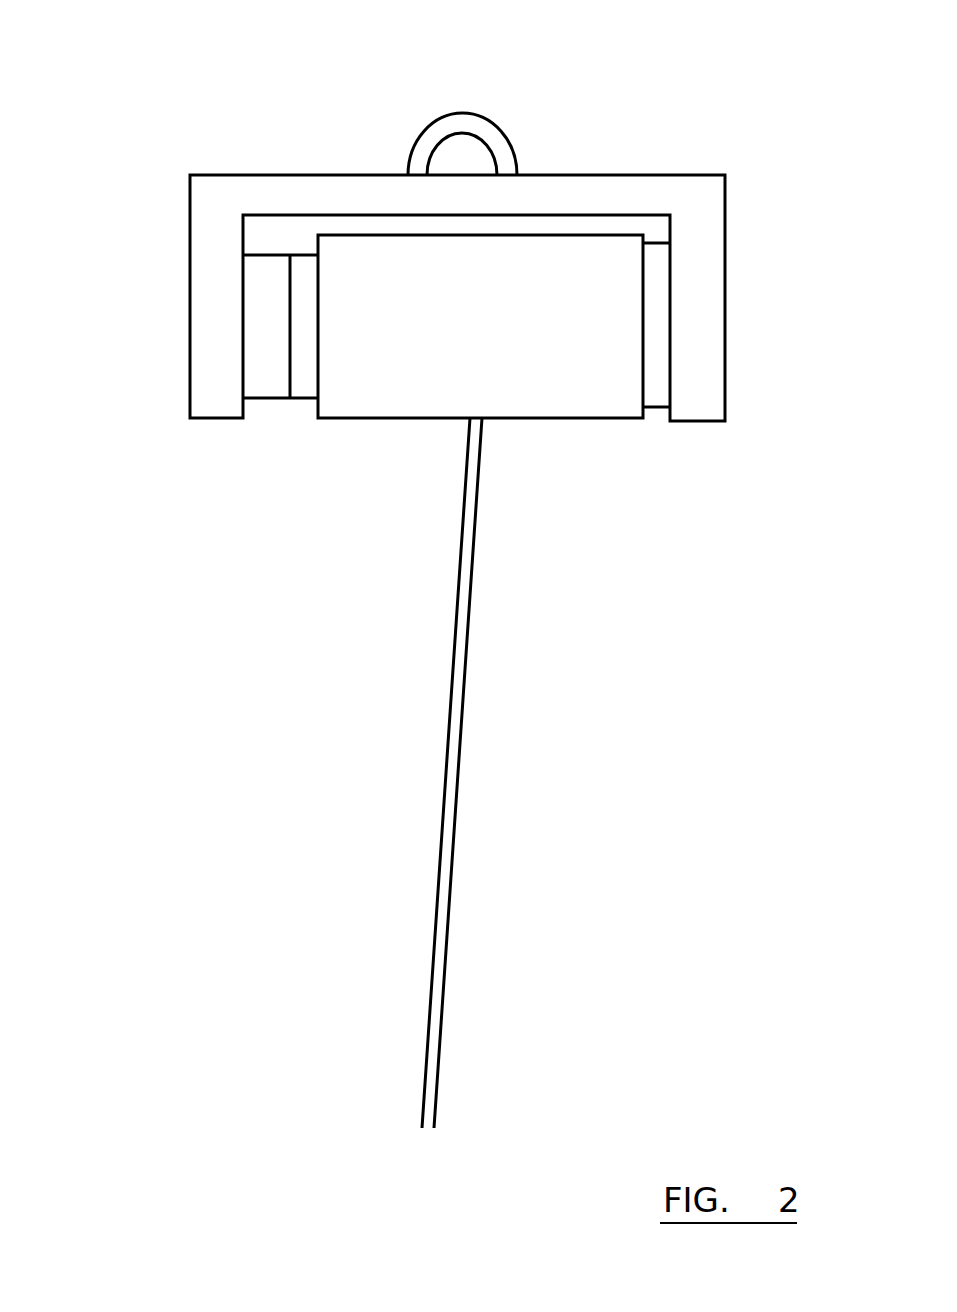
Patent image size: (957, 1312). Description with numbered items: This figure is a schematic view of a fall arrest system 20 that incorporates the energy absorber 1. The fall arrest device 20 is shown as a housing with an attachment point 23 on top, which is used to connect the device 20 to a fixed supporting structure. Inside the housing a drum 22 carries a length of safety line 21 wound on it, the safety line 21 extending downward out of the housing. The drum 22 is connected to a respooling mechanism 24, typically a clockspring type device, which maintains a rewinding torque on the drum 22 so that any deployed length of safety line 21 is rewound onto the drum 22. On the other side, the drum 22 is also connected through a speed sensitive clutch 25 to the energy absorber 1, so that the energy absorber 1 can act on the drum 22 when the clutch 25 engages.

The energy absorber 1 is at (267, 317).
The fall arrest system 20 is at (664, 137).
The safety line 21 is at (448, 857).
The drum 22 is at (552, 388).
The attachment point 23 is at (472, 125).
The respooling mechanism 24 is at (657, 322).
The speed sensitive clutch 25 is at (307, 383).